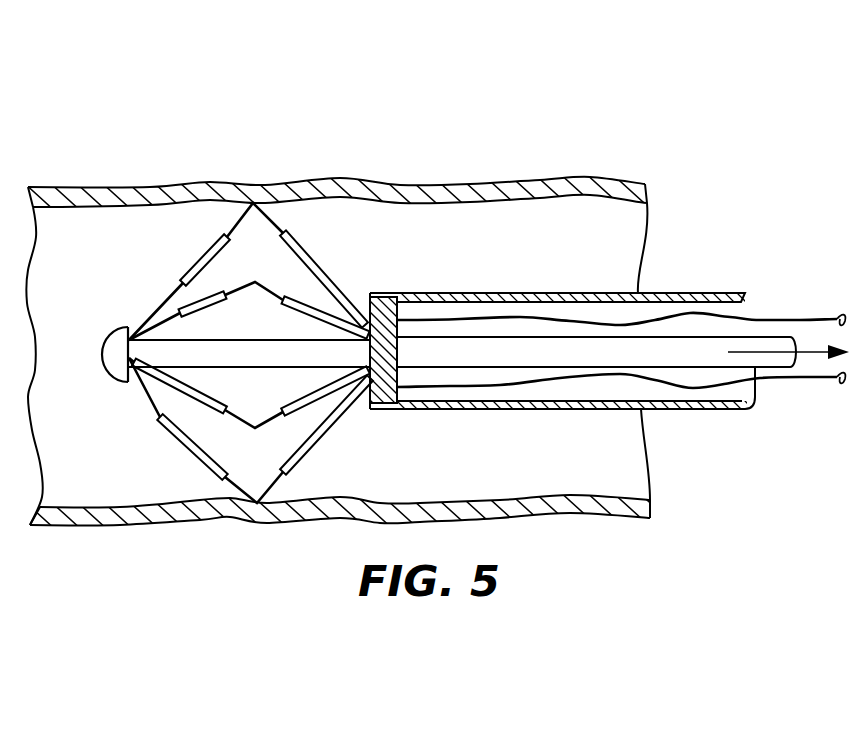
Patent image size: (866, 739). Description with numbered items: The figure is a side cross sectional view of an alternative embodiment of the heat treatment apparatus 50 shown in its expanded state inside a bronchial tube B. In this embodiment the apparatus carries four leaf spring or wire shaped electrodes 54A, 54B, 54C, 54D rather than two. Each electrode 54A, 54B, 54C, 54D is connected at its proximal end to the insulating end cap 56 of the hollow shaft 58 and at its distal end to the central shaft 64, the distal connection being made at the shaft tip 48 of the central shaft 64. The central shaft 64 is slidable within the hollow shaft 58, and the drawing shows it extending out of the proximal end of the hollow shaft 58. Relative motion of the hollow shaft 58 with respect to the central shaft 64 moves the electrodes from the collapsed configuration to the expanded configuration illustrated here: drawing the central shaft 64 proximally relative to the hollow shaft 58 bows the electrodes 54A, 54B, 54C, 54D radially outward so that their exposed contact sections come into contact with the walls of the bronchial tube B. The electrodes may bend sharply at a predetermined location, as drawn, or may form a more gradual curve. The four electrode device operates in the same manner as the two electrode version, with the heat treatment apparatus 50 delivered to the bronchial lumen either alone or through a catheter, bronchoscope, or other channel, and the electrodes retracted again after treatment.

The bronchial tube B is at (565, 183).
The heat treatment apparatus 50 is at (467, 241).
The shaft tip 48 is at (115, 362).
The electrode 54A is at (212, 413).
The electrode 54B is at (167, 418).
The electrode 54C is at (182, 320).
The electrode 54D is at (283, 208).
The insulating end cap 56 is at (383, 407).
The hollow shaft 58 is at (705, 293).
The central shaft 64 is at (542, 350).